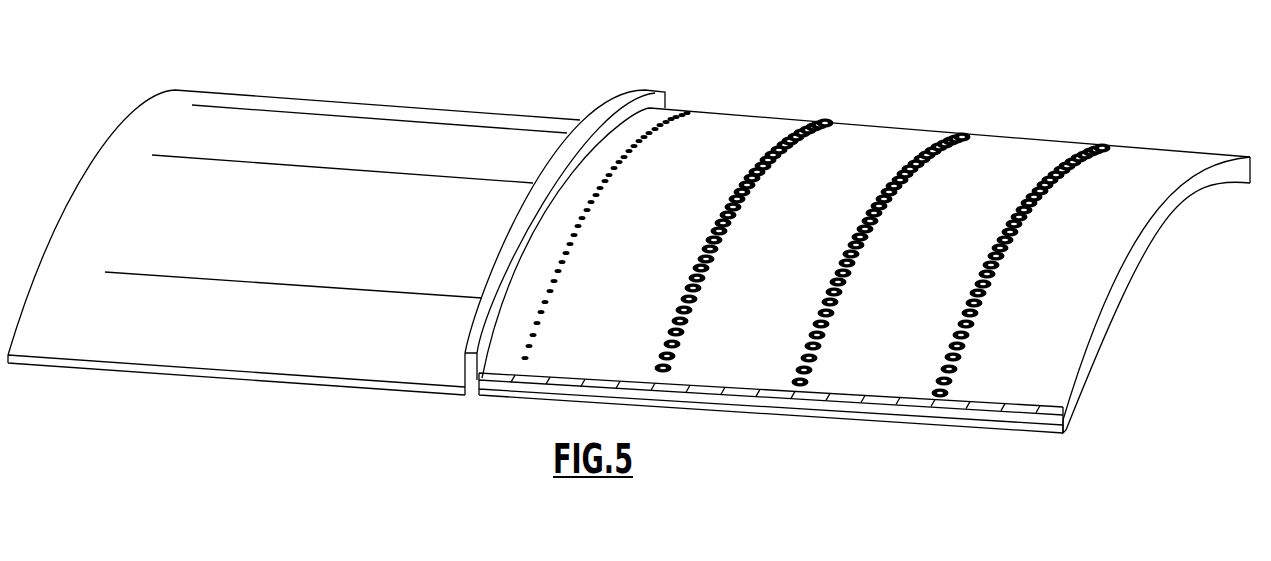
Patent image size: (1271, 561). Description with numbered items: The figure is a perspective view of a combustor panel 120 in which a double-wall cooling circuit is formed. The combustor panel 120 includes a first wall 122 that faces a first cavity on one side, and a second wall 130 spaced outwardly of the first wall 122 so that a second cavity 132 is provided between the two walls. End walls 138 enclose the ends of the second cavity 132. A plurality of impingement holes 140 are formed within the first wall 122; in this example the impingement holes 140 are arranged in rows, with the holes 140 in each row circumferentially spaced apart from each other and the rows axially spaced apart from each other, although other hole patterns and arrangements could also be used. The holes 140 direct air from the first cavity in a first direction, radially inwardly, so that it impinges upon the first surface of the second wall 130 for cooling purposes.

The combustor panel 120 is at (1060, 80).
The first wall 122 is at (1053, 382).
The second wall 130 is at (1015, 433).
The second cavity 132 is at (840, 412).
The end walls 138 is at (470, 372).
The impingement holes 140 is at (687, 112).